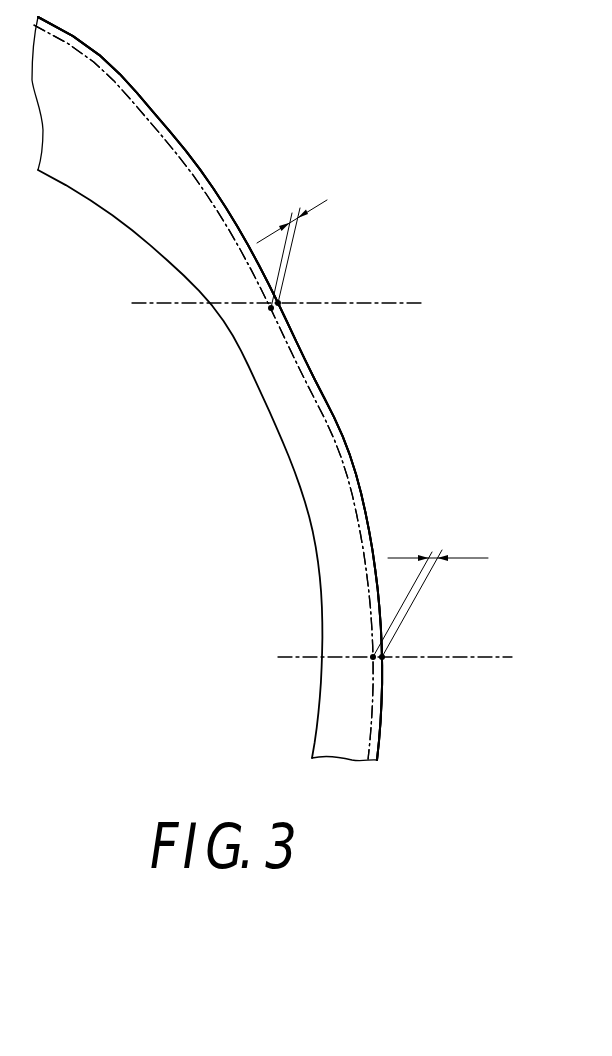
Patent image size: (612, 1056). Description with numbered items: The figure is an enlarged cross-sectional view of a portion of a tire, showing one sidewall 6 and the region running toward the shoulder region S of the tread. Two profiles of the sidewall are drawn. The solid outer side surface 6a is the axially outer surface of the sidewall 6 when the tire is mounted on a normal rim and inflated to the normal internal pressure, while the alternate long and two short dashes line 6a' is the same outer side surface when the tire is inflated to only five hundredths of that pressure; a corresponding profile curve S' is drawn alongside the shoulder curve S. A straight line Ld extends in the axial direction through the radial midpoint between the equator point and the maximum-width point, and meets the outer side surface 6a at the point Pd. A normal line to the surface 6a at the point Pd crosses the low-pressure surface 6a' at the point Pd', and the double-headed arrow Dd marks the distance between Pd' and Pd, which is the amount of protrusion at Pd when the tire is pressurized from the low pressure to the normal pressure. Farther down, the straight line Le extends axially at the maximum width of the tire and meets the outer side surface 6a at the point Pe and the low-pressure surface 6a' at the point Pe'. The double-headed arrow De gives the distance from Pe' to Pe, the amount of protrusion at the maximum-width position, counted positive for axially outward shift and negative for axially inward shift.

The sidewall 6 is at (380, 468).
The outer side surface 6a is at (237, 388).
The outer side surface 6a' is at (247, 392).
The shoulder region S is at (210, 388).
The reference tooth surface curve S' is at (203, 392).
The point Pd is at (317, 324).
The point Pd' is at (222, 325).
The distance Dd is at (292, 247).
The straight line Ld is at (403, 307).
The point Pe is at (430, 642).
The point Pe' is at (403, 680).
The distance De is at (430, 593).
The straight line Le is at (485, 658).